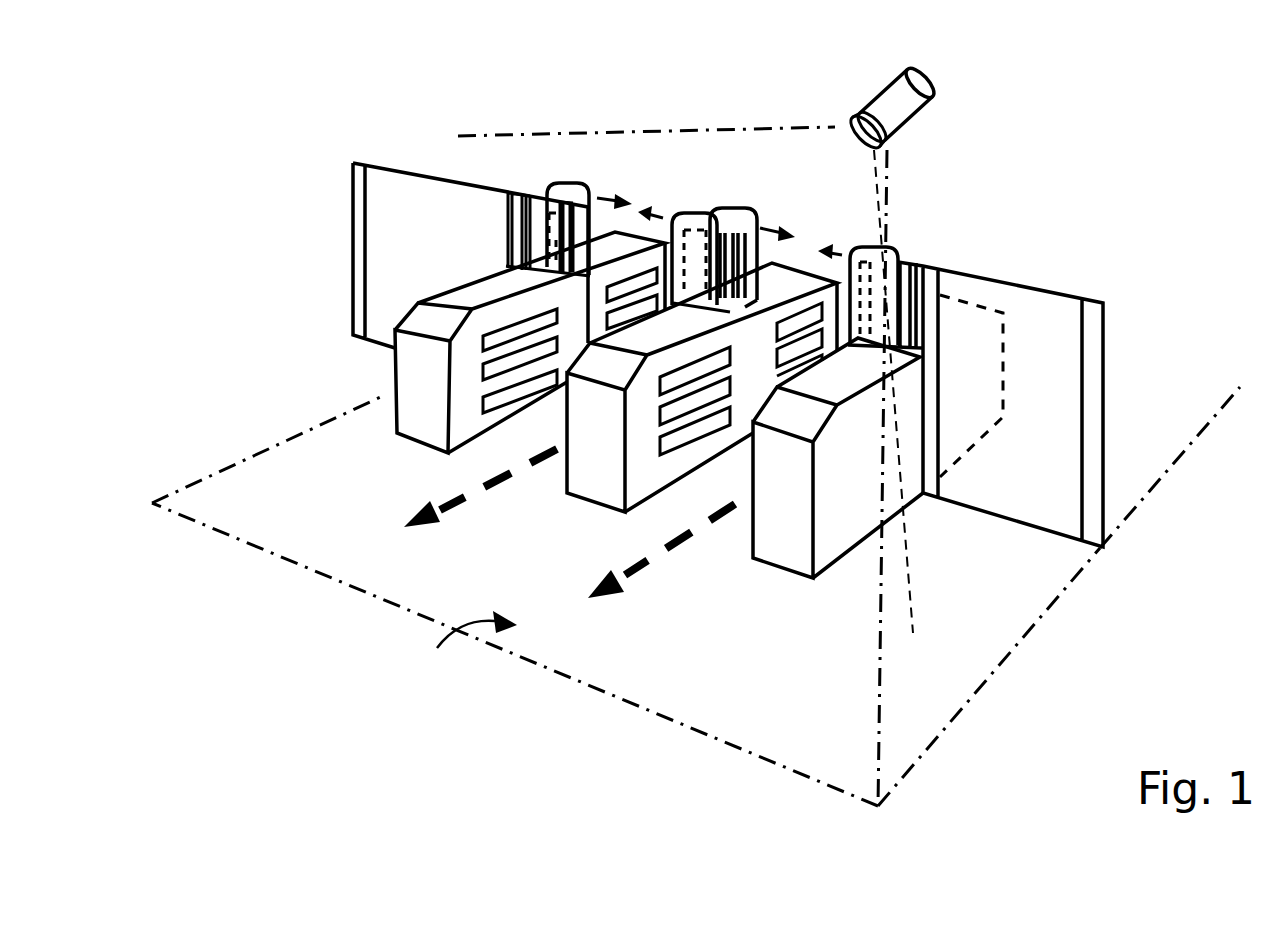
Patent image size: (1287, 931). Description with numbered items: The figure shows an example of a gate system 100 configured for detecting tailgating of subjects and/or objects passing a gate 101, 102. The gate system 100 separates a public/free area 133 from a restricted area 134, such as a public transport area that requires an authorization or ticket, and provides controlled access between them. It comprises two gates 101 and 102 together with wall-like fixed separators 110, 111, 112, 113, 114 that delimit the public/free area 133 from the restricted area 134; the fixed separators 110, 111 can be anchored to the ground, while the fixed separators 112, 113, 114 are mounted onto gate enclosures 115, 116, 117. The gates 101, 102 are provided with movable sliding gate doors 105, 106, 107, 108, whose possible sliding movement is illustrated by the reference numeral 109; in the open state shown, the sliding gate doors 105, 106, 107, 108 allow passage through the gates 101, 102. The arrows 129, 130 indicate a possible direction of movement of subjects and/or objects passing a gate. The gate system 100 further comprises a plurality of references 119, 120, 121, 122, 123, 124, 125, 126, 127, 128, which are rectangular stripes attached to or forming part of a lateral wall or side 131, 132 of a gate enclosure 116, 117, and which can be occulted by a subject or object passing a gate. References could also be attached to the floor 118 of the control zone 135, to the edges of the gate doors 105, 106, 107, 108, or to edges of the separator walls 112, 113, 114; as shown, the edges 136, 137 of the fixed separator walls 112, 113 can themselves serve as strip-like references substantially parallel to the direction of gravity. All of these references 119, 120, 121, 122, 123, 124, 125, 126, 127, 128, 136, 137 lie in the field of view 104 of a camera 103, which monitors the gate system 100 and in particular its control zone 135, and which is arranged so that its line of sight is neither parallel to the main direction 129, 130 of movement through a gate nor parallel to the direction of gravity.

The gate system 100 is at (1106, 136).
The gate 101 is at (805, 180).
The gate 102 is at (653, 163).
The camera 103 is at (905, 106).
The field of view 104 is at (827, 153).
The sliding gate door 105 is at (900, 253).
The sliding gate door 106 is at (740, 210).
The sliding gate door 107 is at (688, 212).
The sliding gate door 108 is at (548, 190).
The movement of sliding gate doors 109 is at (605, 196).
The fixed separator 110 is at (1043, 323).
The fixed separator 111 is at (388, 180).
The fixed separator 112 is at (920, 335).
The fixed separator 113 is at (715, 307).
The fixed separator 114 is at (548, 220).
The gate enclosure 115 is at (791, 542).
The gate enclosure 116 is at (582, 498).
The gate enclosure 117 is at (410, 427).
The floor 118 is at (334, 537).
The reference 119 is at (680, 447).
The reference 120 is at (690, 407).
The reference 121 is at (700, 372).
The reference 122 is at (508, 398).
The reference 123 is at (505, 367).
The reference 124 is at (505, 338).
The reference 125 is at (625, 292).
The reference 126 is at (625, 317).
The reference 127 is at (818, 325).
The reference 128 is at (810, 325).
The arrow 129 is at (613, 597).
The arrow 130 is at (430, 527).
The lateral wall 131 is at (652, 487).
The lateral wall 132 is at (468, 427).
The public/free area 133 is at (1133, 467).
The restricted area 134 is at (1023, 595).
The control zone 135 is at (720, 705).
The edge 136 is at (730, 254).
The edge 137 is at (565, 246).